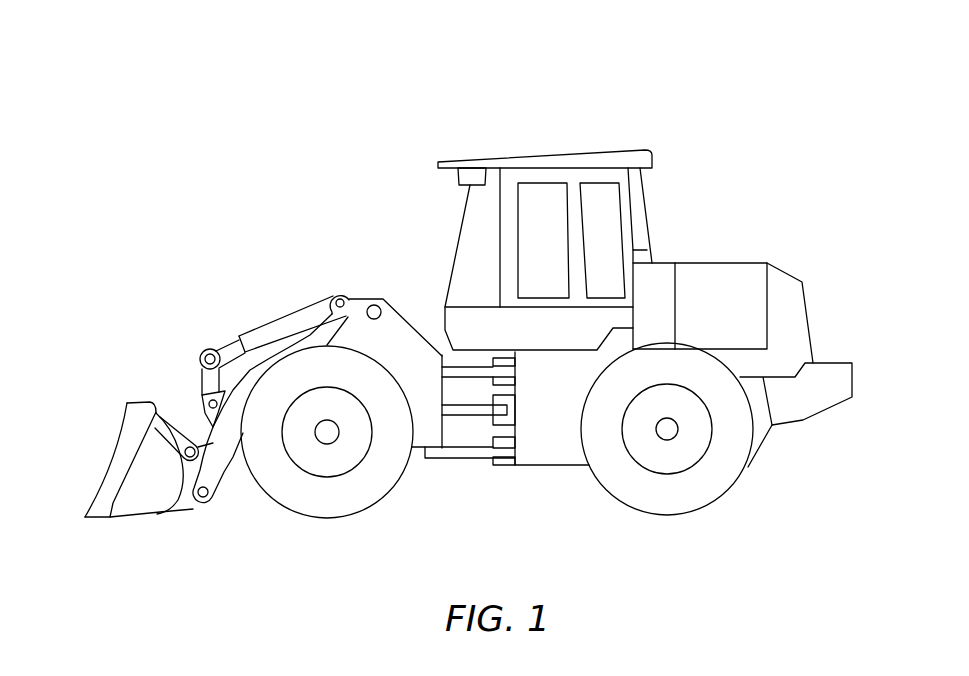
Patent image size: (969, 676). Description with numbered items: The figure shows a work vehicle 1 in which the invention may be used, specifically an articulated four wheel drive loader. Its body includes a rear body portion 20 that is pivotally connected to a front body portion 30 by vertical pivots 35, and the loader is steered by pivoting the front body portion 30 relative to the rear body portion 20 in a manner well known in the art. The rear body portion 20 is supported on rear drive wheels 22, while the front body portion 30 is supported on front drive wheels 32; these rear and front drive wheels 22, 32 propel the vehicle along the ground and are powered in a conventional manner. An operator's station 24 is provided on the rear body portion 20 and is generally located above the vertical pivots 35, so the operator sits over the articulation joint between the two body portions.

The work vehicle 1 is at (677, 108).
The rear body portion 20 is at (747, 245).
The rear drive wheels 22 is at (680, 497).
The operator's station 24 is at (560, 137).
The front body portion 30 is at (365, 283).
The front drive wheels 32 is at (313, 503).
The vertical pivots 35 is at (480, 477).